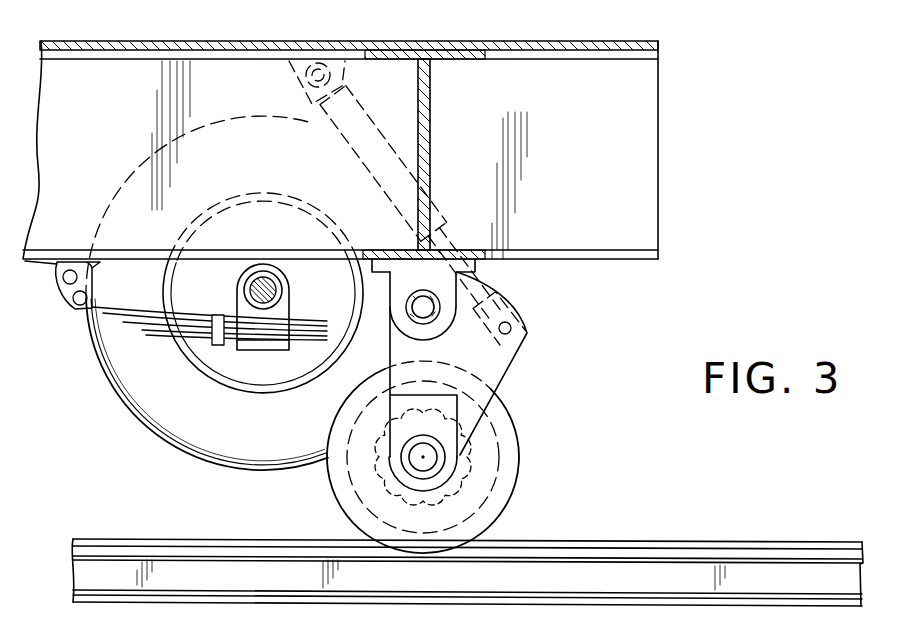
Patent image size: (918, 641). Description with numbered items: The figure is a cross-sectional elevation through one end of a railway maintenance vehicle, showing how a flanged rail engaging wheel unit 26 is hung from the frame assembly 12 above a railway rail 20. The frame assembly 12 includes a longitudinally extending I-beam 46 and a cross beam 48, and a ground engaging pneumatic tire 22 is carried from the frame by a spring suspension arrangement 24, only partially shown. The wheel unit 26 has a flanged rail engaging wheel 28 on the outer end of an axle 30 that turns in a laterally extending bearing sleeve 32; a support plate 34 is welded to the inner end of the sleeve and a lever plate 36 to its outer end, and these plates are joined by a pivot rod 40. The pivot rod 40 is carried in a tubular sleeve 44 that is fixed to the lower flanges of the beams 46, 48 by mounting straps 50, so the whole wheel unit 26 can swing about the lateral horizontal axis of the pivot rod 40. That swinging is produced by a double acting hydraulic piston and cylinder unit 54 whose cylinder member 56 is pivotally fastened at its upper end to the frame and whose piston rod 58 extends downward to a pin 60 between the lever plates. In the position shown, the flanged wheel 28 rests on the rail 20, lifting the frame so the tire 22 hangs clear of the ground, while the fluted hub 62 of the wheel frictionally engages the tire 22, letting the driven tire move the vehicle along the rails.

The frame assembly 12 is at (428, 35).
The railway rails 20 is at (651, 534).
The ground engaging pneumatic tires 22 is at (158, 425).
The spring suspension arrangement 24 is at (243, 356).
The flanged rail engaging wheel unit 26 is at (531, 345).
The flanged rail engaging wheel 28 is at (490, 440).
The axle 30 is at (426, 457).
The bearing sleeve 32 is at (442, 466).
The support plate 34 is at (457, 410).
The lever plate 36 is at (512, 366).
The pivot rod 40 is at (420, 307).
The tubular sleeve 44 is at (410, 322).
The I-beam 46 is at (533, 72).
The cross beam 48 is at (418, 78).
The mounting strap 50 is at (376, 265).
The double acting hydraulic piston and cylinder unit 54 is at (382, 109).
The cylinder member 56 is at (381, 147).
The piston rod 58 is at (477, 276).
The pin 60 is at (512, 327).
The hub 62 is at (378, 470).